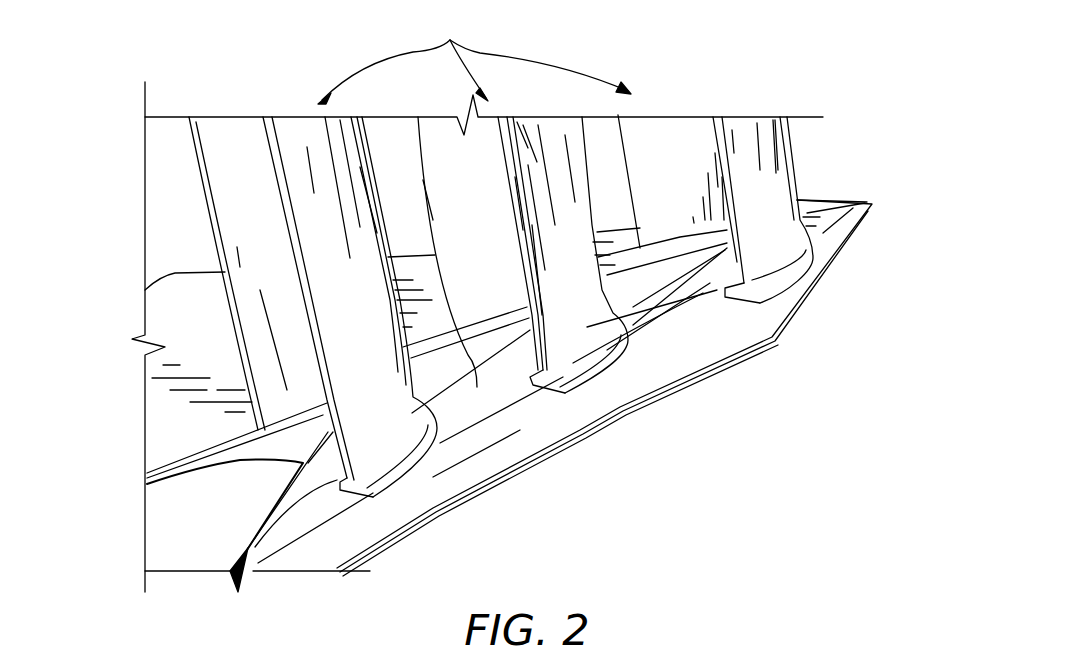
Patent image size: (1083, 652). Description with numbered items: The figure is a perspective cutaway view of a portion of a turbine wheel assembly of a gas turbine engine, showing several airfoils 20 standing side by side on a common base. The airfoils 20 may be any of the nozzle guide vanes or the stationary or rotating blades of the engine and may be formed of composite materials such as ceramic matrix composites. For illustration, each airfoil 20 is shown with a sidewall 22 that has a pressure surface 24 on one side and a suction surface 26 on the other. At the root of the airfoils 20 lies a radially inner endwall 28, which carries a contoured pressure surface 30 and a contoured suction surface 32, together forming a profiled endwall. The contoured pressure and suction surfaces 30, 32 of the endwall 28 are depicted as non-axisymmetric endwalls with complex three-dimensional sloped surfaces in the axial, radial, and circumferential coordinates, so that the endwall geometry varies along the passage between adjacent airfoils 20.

The airfoils 20 is at (474, 55).
The sidewall 22 is at (95, 233).
The pressure surface 24 is at (293, 180).
The suction surface 26 is at (245, 283).
The radially inner endwall 28 is at (535, 465).
The contoured pressure surface 30 is at (303, 513).
The contoured suction surface 32 is at (437, 408).